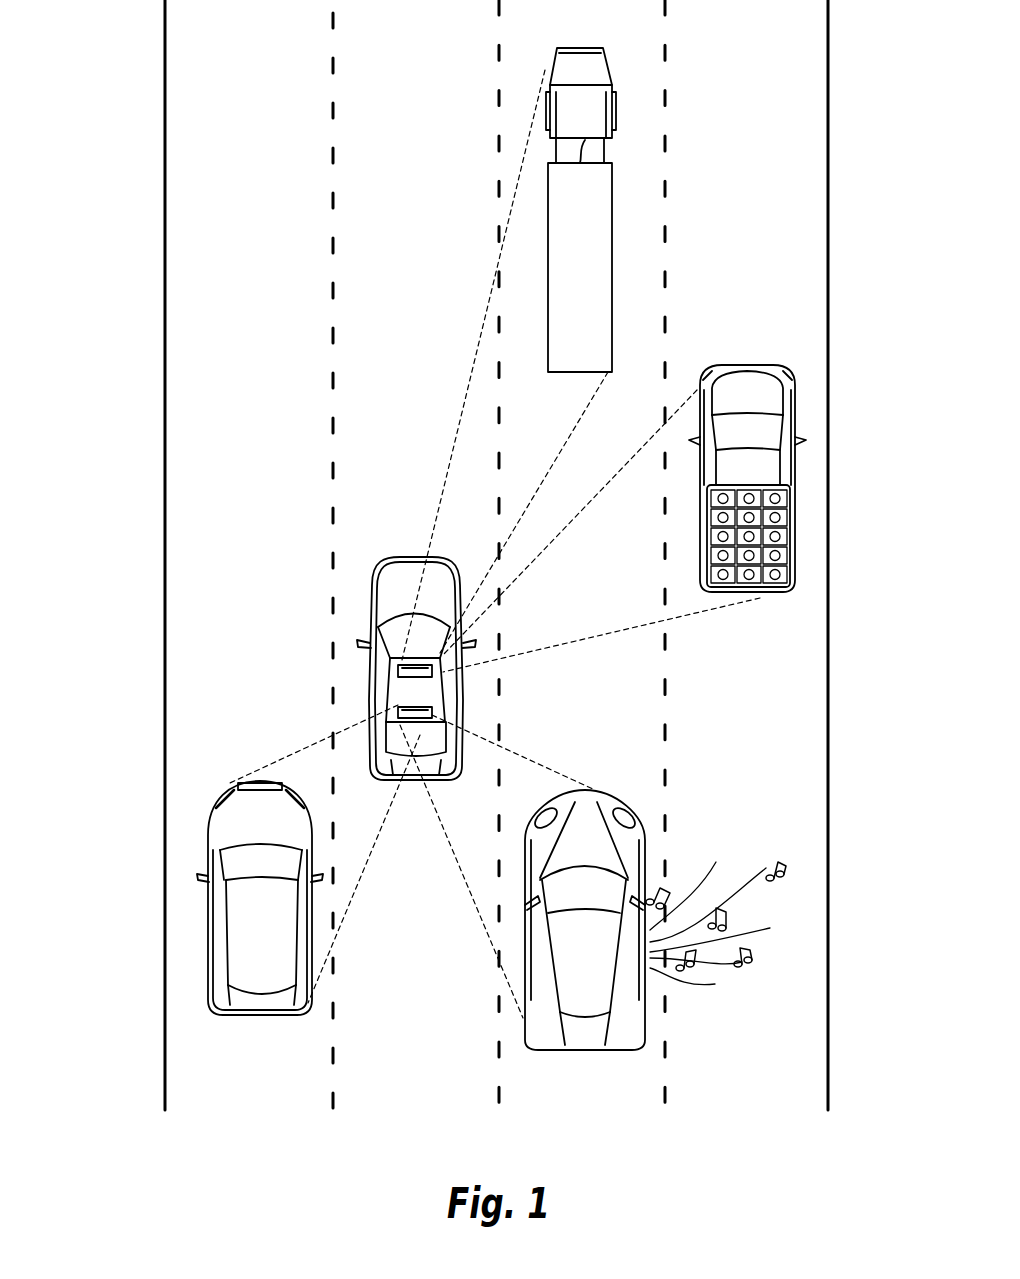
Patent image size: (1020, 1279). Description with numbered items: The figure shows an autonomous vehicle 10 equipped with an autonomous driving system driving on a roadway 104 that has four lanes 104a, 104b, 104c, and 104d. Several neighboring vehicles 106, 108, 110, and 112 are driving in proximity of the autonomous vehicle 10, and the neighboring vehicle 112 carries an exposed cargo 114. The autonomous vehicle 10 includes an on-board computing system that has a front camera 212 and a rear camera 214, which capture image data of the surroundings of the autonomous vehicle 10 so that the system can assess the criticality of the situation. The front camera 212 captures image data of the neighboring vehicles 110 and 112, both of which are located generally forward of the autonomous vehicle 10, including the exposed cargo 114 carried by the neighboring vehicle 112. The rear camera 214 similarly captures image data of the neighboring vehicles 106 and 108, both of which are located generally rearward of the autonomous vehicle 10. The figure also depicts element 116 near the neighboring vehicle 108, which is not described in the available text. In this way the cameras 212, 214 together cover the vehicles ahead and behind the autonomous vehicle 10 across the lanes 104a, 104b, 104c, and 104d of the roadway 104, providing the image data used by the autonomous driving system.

The roadway 104 is at (158, 107).
The lane 104a is at (217, 31).
The lane 104b is at (383, 31).
The lane 104c is at (551, 31).
The lane 104d is at (717, 31).
The autonomous vehicle 10 is at (423, 666).
The front camera 212 is at (415, 678).
The rear camera 214 is at (396, 701).
The neighboring vehicle 106 is at (262, 1016).
The neighboring vehicle 108 is at (645, 1005).
The neighboring vehicle 110 is at (612, 110).
The neighboring vehicle 112 is at (797, 475).
The exposed cargo 114 is at (792, 512).
The sound/music 116 is at (776, 866).